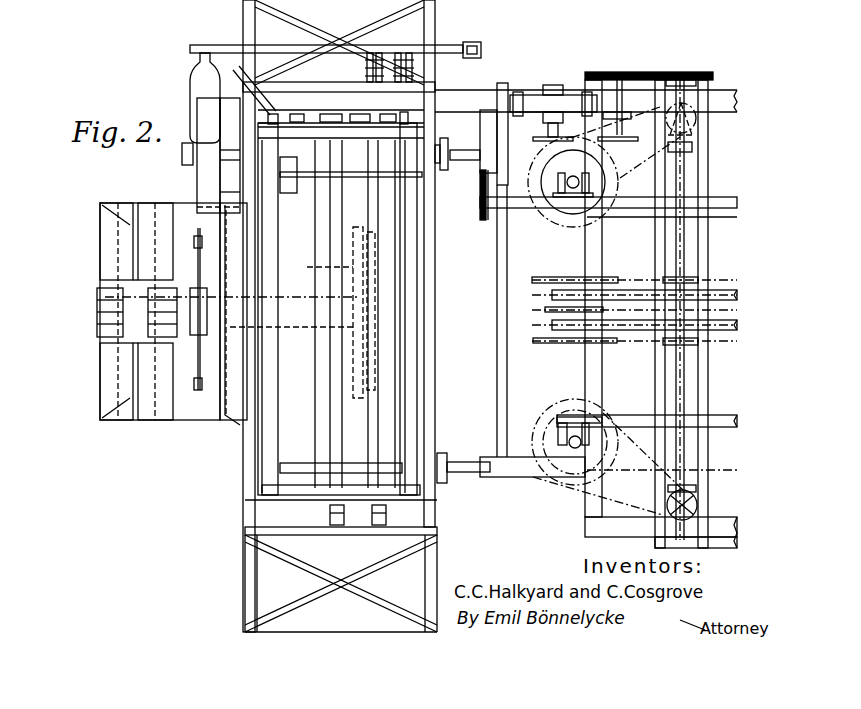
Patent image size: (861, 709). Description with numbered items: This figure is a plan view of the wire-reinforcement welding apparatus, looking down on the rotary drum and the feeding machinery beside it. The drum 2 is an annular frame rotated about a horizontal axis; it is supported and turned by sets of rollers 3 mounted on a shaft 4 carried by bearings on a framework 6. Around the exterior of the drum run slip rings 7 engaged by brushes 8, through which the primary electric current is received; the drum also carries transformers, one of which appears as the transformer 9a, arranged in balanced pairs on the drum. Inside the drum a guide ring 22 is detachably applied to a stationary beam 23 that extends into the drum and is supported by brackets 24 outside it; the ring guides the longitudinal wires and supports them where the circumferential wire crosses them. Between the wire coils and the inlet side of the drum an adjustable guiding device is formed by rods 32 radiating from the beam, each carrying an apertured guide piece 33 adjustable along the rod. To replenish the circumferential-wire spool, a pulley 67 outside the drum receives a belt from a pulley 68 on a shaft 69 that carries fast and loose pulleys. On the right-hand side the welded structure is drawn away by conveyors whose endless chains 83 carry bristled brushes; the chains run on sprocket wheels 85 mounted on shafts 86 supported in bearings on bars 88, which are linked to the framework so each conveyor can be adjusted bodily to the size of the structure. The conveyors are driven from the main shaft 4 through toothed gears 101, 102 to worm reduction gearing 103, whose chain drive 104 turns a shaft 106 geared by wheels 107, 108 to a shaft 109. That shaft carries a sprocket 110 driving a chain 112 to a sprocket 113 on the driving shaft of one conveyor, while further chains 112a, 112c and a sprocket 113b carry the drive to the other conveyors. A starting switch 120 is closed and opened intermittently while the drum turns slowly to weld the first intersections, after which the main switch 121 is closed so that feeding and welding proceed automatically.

The drum 2 is at (435, 298).
The rollers 3 is at (418, 190).
The shaft 4 is at (468, 150).
The framework 6 is at (243, 15).
The slip rings 7 is at (380, 422).
The brushes 8 is at (345, 515).
The lower cross bar 9a is at (304, 466).
The guide ring 22 is at (322, 312).
The stationary beam 23 is at (293, 335).
The brackets 24 is at (110, 328).
The rods 32 is at (196, 364).
The apertured guide piece 33 is at (190, 380).
The pulley 67 is at (222, 405).
The pulley 68 is at (222, 176).
The shaft 69 is at (448, 172).
The endless chains 83 is at (630, 415).
The sprocket wheels 85 is at (545, 330).
The shafts 86 is at (565, 192).
The bars 88 is at (630, 211).
The toothed gear 101 is at (508, 185).
The toothed gear 102 is at (497, 88).
The worm reduction gearing 103 is at (545, 88).
The chain drive 104 is at (545, 141).
The shaft 106 is at (625, 85).
The wheel 107 is at (606, 72).
The wheel 108 is at (708, 72).
The shaft 109 is at (685, 237).
The sprocket 110 is at (690, 279).
The chain 112 is at (620, 275).
The chain 112a is at (638, 508).
The chain 112c is at (620, 185).
The sprocket 113 is at (553, 277).
The sprocket 113b is at (555, 345).
The starting switch 120 is at (370, 55).
The main switch 121 is at (408, 55).